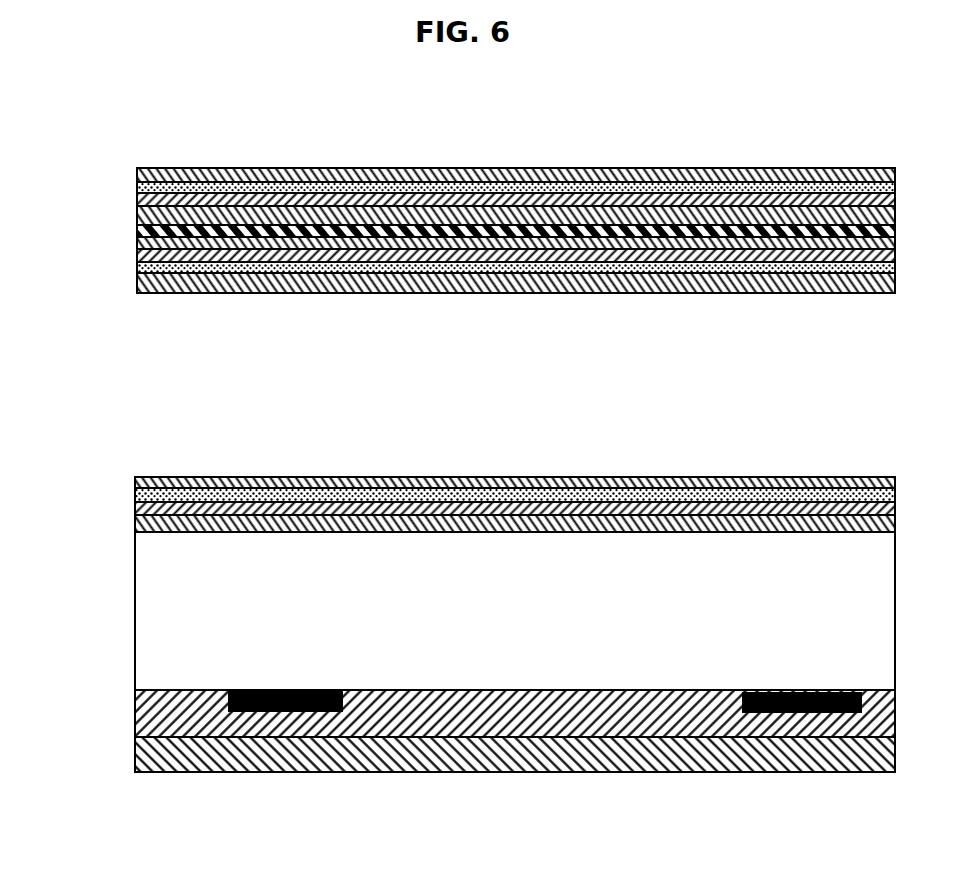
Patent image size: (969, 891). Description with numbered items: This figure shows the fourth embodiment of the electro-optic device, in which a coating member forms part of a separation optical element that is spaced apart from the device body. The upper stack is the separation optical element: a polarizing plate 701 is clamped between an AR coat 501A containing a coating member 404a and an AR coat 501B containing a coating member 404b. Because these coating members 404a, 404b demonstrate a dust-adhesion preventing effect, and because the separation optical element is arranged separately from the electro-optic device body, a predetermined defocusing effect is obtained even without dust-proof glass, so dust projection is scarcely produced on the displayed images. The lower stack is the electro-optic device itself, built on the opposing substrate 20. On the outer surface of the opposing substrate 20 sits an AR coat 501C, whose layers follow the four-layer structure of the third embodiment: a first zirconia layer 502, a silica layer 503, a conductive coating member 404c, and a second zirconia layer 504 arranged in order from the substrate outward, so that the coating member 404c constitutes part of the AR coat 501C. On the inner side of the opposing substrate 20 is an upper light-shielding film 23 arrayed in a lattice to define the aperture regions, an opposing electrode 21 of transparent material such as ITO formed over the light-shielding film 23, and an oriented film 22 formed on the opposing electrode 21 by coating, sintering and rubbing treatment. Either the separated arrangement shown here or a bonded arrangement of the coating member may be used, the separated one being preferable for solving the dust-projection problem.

The coating member 404a is at (158, 168).
The polarizing plate 701 is at (492, 206).
The AR coat 501A is at (121, 222).
The AR coat 501B is at (121, 288).
The coating member 404b is at (178, 281).
The coating member 404c is at (143, 492).
The second zirconia layer 504 is at (232, 477).
The AR coat 501C is at (122, 530).
The silica layer 503 is at (142, 517).
The first zirconia layer 502 is at (160, 532).
The opposing substrate 20 is at (148, 608).
The opposing electrode 21 is at (133, 722).
The oriented film 22 is at (163, 771).
The upper light-shielding film 23 is at (295, 712).